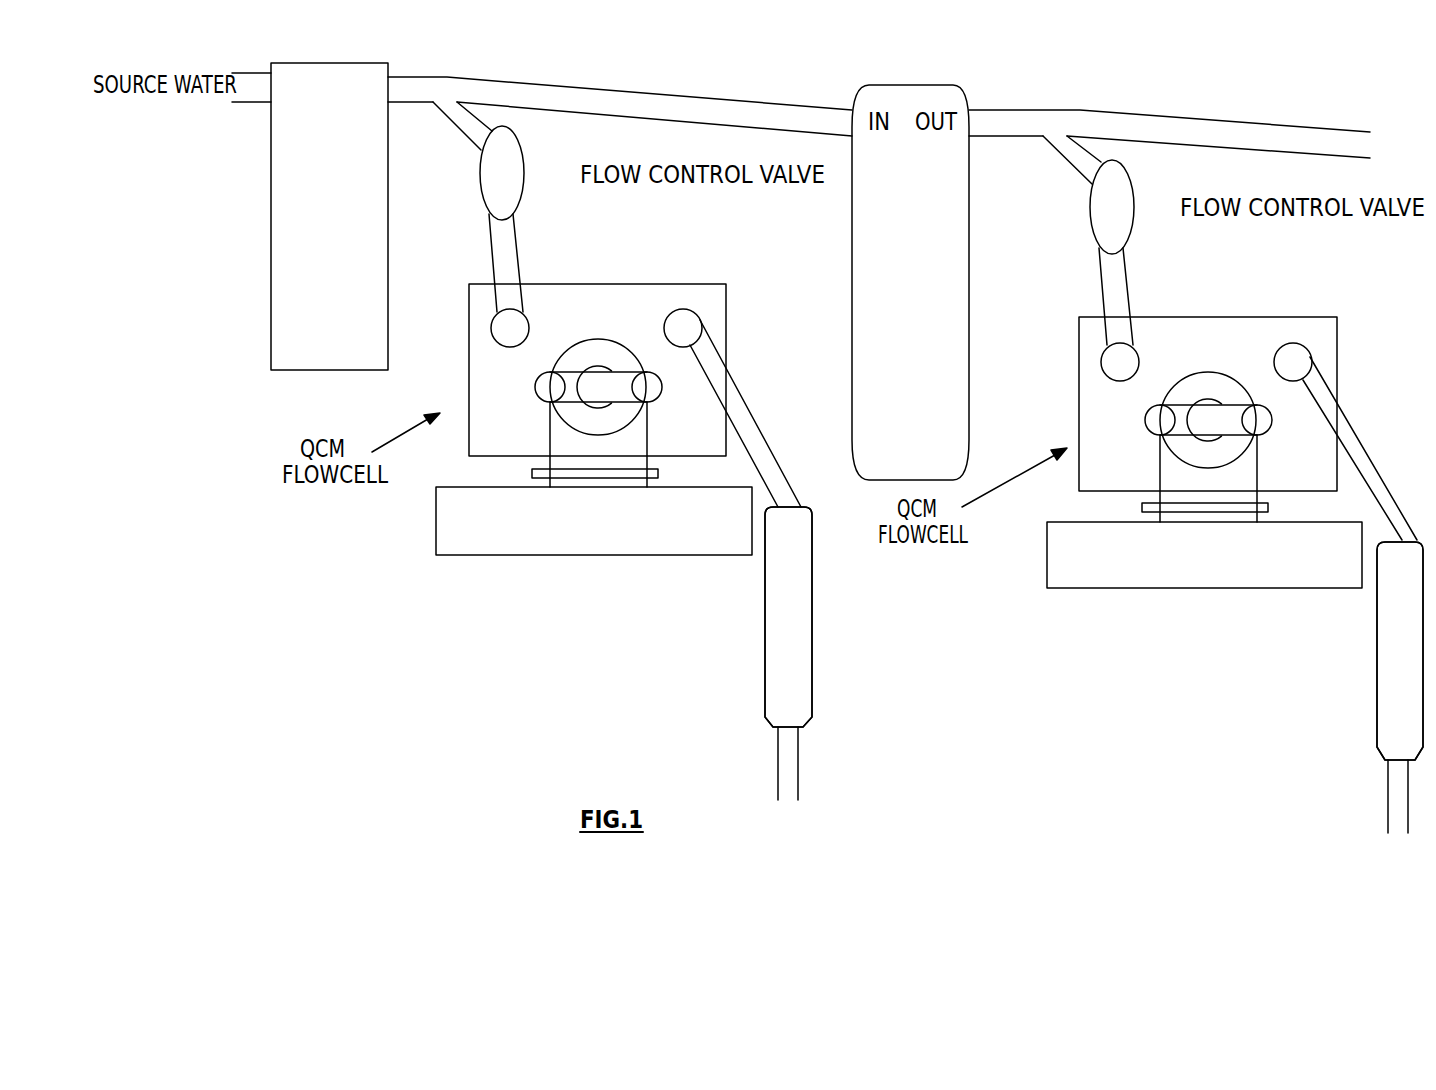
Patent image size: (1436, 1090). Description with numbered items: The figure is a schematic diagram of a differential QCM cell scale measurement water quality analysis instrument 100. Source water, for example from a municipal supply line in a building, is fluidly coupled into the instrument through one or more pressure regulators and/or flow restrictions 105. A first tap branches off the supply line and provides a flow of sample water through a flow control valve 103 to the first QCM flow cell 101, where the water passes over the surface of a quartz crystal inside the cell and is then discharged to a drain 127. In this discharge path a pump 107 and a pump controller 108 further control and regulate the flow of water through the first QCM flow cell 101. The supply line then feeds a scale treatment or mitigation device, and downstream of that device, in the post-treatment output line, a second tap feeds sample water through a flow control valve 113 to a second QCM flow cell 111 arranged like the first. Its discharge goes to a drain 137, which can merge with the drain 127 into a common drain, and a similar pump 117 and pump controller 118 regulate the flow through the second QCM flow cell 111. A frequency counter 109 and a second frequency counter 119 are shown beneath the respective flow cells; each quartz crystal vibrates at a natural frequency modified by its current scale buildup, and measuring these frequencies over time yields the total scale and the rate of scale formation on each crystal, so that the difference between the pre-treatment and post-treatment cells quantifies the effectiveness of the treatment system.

The differential QCM cell scale measurement water quality analysis instrument 100 is at (432, 730).
The first QCM flow cell 101 is at (645, 284).
The flow control valve 103 is at (523, 173).
The pressure regulators and/or flow restrictions 105 is at (308, 63).
The pump 107 is at (770, 578).
The pump controller 108 is at (770, 673).
The frequency counter 109 is at (607, 555).
The second QCM flow cell 111 is at (1237, 317).
The flow control valve 113 is at (1177, 207).
The pump 117 is at (1382, 610).
The pump controller 118 is at (1380, 708).
The second frequency counter 119 is at (1224, 588).
The drain 127 is at (794, 793).
The drain 137 is at (1396, 828).